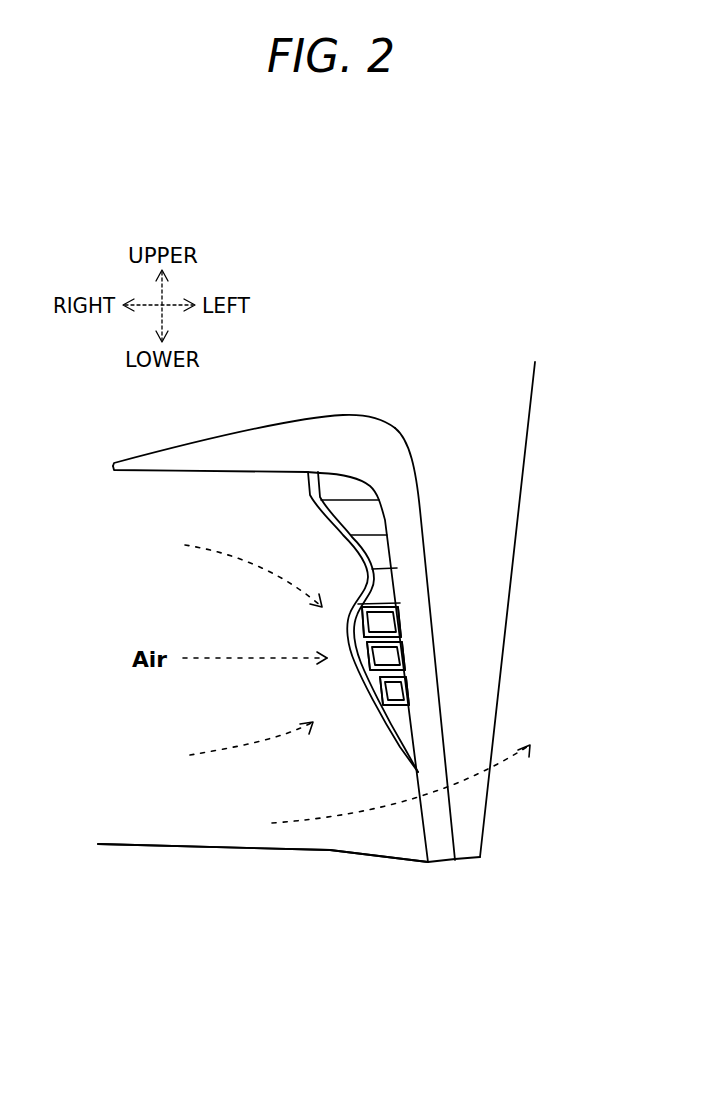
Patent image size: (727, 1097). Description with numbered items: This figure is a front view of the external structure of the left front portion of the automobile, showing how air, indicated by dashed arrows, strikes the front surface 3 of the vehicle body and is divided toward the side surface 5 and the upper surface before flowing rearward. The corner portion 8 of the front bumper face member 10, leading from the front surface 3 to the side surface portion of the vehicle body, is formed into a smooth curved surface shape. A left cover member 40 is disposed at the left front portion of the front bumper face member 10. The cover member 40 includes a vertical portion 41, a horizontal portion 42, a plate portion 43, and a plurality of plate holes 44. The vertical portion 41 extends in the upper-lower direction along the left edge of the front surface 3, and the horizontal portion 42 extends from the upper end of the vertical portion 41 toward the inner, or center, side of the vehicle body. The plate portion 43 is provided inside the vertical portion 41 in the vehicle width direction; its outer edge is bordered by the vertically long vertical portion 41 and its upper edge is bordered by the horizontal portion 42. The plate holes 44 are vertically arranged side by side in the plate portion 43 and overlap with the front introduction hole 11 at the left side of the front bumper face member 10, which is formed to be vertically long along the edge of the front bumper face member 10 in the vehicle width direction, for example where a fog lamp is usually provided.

The front surface 3 is at (167, 805).
The side surface 5 is at (515, 543).
The corner portion 8 is at (470, 843).
The front bumper face member 10 is at (242, 813).
The front introduction hole 11 is at (497, 671).
The cover member 40 is at (380, 387).
The vertical portion 41 is at (398, 480).
The horizontal portion 42 is at (260, 452).
The plate portion 43 is at (330, 522).
The plate holes 44 is at (380, 623).